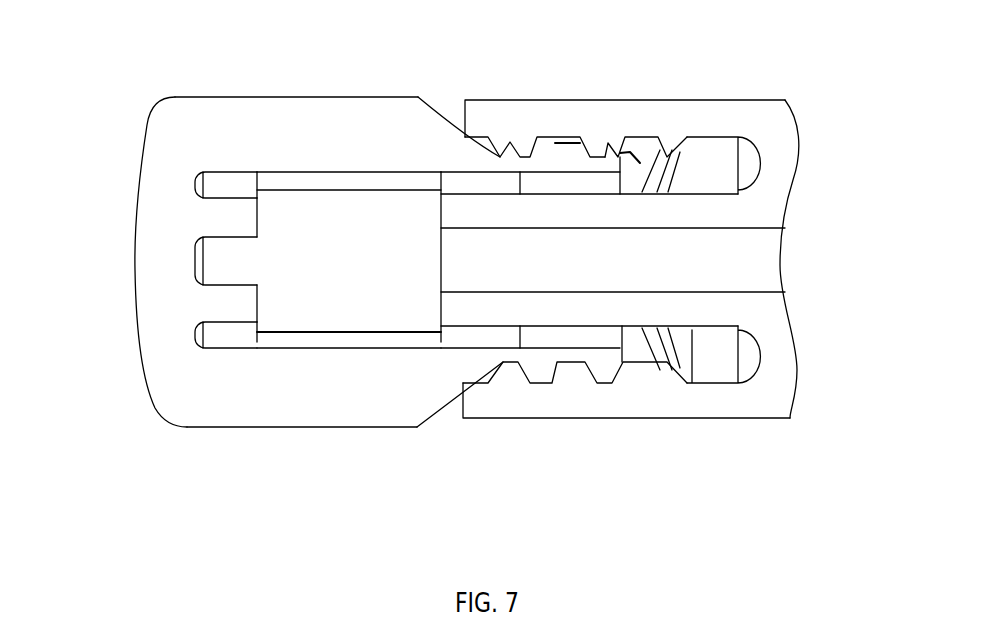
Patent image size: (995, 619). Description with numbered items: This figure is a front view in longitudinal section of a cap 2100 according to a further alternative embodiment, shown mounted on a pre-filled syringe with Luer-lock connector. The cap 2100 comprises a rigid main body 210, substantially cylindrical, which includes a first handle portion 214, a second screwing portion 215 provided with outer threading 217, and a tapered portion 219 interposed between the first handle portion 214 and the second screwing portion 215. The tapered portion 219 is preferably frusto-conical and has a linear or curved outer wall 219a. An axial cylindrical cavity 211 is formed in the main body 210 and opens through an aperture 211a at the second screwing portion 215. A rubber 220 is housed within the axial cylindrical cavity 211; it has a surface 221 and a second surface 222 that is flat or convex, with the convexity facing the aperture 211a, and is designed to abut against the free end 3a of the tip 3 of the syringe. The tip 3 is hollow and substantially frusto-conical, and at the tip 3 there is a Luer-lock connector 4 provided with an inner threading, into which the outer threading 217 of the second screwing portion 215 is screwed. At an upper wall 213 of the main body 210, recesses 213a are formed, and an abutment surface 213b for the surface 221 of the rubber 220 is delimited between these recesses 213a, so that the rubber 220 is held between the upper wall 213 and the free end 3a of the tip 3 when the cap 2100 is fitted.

The cap 2100 is at (365, 70).
The rigid main body 210 is at (136, 142).
The upper wall 213 is at (164, 263).
The recesses 213a is at (228, 185).
The abutment surface 213b is at (255, 220).
The first handle portion 214 is at (281, 98).
The second screwing portion 215 is at (611, 156).
The outer threading 217 is at (570, 148).
The tapered portion 219 is at (437, 362).
The outer wall 219a is at (435, 410).
The rubber 220 is at (349, 347).
The surface 221 is at (257, 296).
The second surface 222 is at (441, 262).
The axial cylindrical cavity 211 is at (580, 337).
The aperture 211a is at (630, 338).
The tip 3 is at (755, 243).
The free end 3a is at (441, 212).
The Luer-lock connector 4 is at (750, 97).